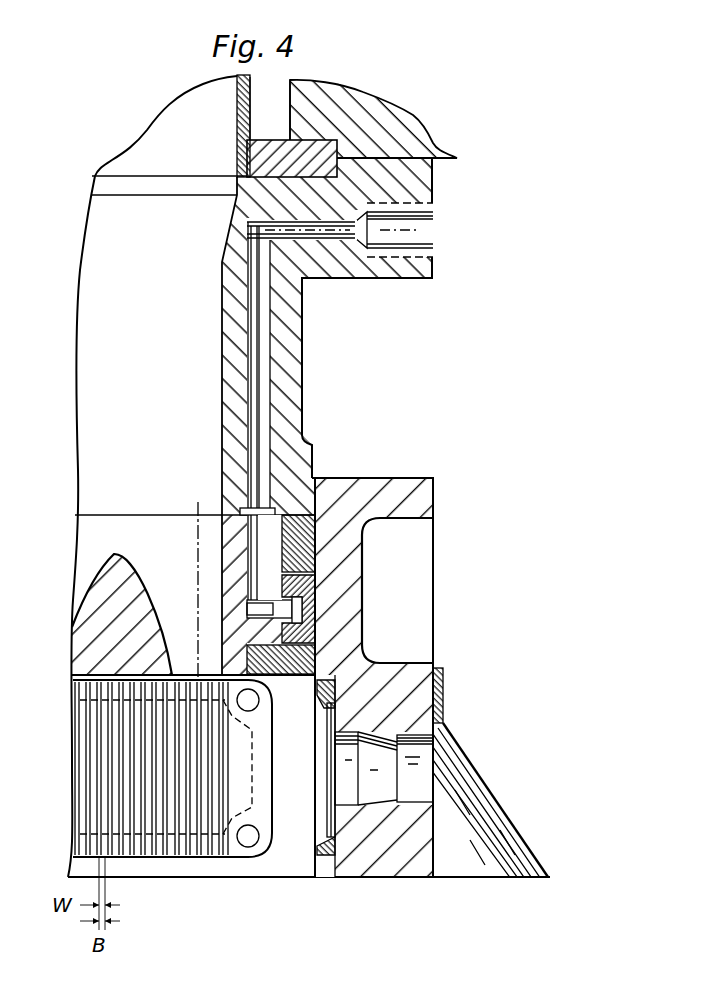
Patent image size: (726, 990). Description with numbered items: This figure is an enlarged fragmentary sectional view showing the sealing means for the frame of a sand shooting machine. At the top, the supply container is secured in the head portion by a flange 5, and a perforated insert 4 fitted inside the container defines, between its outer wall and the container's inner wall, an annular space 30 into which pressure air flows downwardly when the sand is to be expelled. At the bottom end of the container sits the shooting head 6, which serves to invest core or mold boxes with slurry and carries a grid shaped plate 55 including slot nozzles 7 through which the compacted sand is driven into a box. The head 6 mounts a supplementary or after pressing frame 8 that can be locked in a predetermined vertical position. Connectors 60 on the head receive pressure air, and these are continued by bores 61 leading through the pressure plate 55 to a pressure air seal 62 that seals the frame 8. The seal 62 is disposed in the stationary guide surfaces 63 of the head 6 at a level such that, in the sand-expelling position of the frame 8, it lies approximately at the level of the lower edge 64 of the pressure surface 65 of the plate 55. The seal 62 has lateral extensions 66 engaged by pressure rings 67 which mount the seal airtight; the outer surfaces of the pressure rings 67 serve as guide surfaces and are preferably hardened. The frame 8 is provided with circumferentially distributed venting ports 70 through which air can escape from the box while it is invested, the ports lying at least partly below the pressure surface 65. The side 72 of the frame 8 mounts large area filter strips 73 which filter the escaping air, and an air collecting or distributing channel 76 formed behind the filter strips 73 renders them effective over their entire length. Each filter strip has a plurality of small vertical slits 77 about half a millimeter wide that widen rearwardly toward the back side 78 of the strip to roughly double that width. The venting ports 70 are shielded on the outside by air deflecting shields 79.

The perforated insert 4 is at (247, 158).
The flange 5 is at (435, 148).
The shooting head 6 is at (288, 387).
The slot nozzles 7 is at (82, 572).
The after pressing frame 8 is at (362, 486).
The annular space 30 is at (262, 97).
The grid shaped plate 55 is at (95, 644).
The connectors 60 is at (425, 221).
The bores 61 is at (265, 367).
The pressure air seal 62 is at (318, 606).
The stationary guide surfaces 63 is at (314, 563).
The lower edge of the pressure surface 64 is at (303, 676).
The pressure surface 65 is at (88, 682).
The lateral extensions 66 is at (296, 586).
The pressure rings 67 is at (290, 660).
The venting ports 70 is at (425, 750).
The side of frame 72 is at (313, 832).
The filter strips 73 is at (328, 852).
The air collecting or distributing channel 76 is at (337, 783).
The vertical slits 77 is at (320, 815).
The back side of the filter strip 78 is at (330, 806).
The air deflecting shields 79 is at (486, 797).